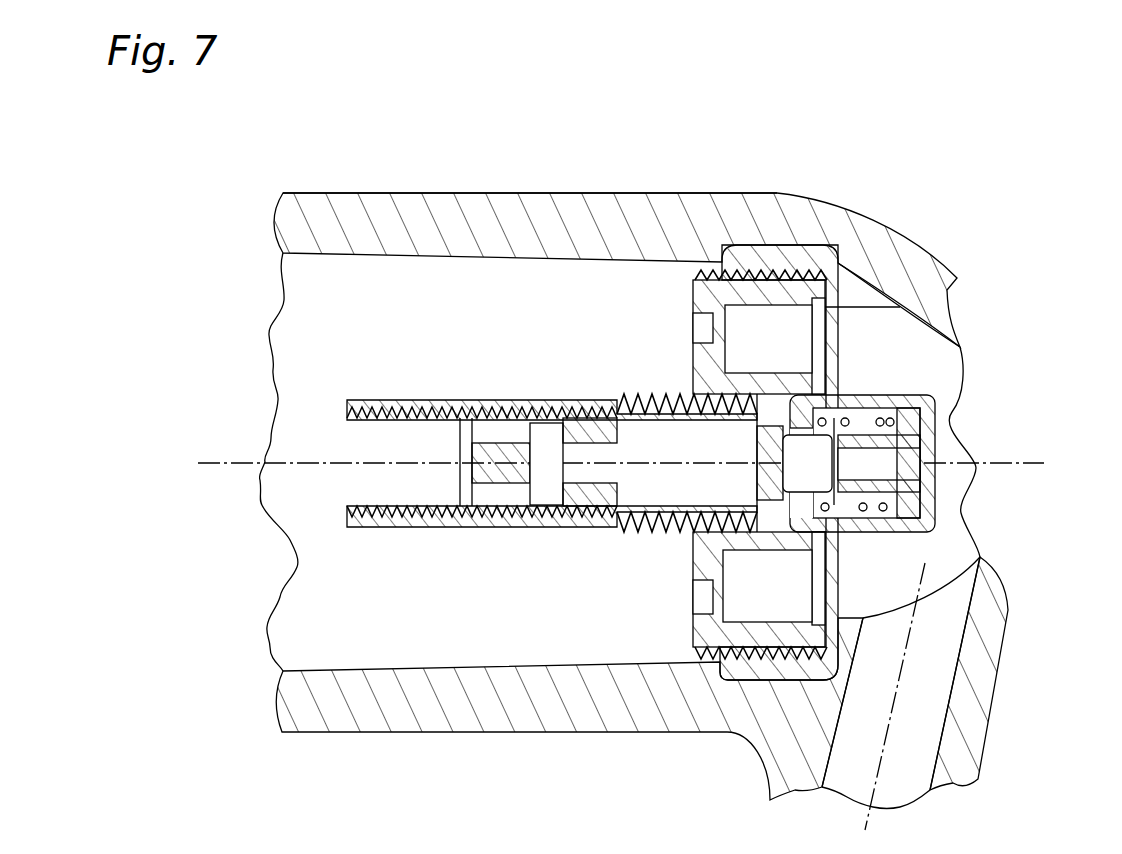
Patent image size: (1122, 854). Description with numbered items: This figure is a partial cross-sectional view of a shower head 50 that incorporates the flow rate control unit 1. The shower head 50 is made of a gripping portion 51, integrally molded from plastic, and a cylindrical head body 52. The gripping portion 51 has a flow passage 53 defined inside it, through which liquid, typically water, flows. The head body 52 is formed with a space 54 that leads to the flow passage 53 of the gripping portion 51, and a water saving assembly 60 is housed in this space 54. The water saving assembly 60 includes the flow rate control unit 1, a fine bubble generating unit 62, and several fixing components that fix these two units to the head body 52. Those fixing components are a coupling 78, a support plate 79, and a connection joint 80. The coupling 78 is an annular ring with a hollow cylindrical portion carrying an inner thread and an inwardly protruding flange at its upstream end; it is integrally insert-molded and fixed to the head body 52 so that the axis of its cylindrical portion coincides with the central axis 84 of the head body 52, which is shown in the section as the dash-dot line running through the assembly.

The flow rate control unit 1 is at (937, 406).
The shower head 50 is at (346, 181).
The gripping portion 51 is at (980, 748).
The head body 52 is at (443, 193).
The flow passage 53 is at (937, 664).
The space 54 is at (935, 356).
The water saving assembly 60 is at (845, 333).
The fine bubble generating unit 62 is at (455, 400).
The coupling 78 is at (773, 244).
The support plate 79 is at (812, 343).
The connection joint 80 is at (693, 288).
The central axis 84 is at (210, 462).